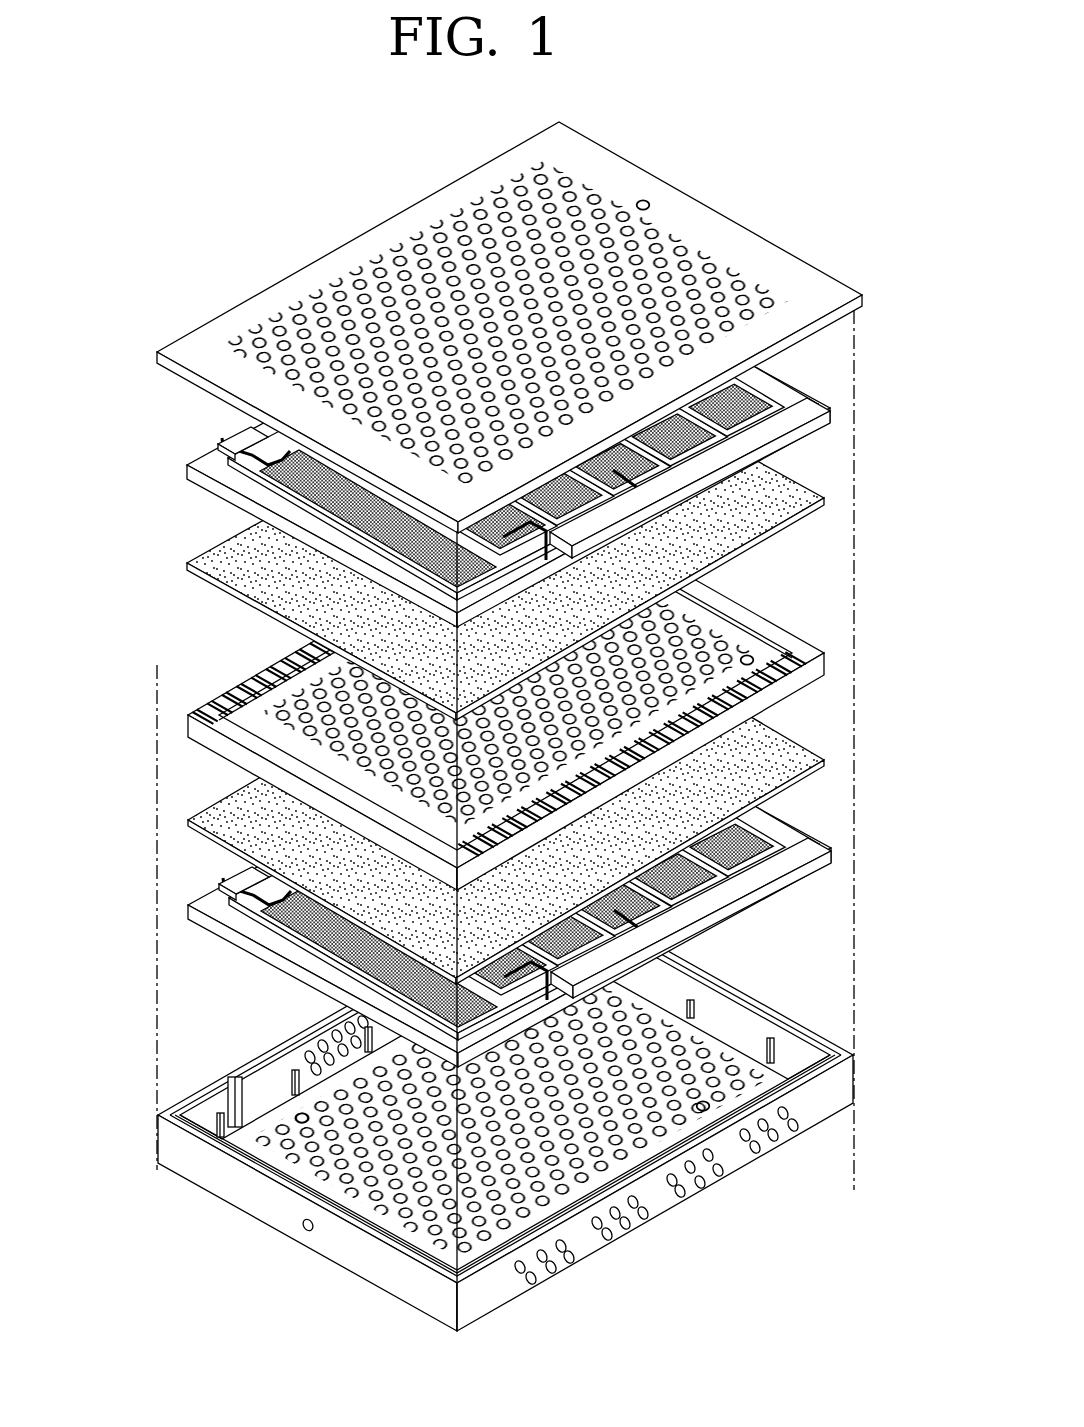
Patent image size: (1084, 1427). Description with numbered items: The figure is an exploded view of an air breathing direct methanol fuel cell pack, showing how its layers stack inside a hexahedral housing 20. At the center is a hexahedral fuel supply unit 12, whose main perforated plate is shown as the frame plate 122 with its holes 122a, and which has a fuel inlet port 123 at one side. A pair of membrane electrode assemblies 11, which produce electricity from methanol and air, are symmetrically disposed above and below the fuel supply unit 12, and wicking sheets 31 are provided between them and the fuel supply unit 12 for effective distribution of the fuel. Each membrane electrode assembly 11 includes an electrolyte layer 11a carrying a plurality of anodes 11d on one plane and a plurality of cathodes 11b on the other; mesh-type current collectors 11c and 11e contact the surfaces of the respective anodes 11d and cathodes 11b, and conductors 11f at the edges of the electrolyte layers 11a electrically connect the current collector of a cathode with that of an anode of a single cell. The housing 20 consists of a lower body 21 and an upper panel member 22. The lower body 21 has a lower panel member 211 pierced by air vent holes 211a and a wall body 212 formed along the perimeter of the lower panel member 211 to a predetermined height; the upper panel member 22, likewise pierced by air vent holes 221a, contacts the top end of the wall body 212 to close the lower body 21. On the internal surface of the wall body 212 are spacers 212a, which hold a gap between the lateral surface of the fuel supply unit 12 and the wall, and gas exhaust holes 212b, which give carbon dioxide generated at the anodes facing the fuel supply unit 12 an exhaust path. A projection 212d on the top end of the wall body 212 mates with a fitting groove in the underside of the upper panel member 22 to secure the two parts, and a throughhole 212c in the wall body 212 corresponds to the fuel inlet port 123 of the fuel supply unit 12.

The housing 20 is at (139, 228).
The upper panel member 22 is at (509, 326).
The air vent holes 221a is at (645, 200).
The membrane electrode assembly 11 is at (182, 913).
The electrolyte layer 11a is at (477, 434).
The cathodes 11b is at (233, 467).
The mesh-type current collector 11c is at (493, 443).
The anodes 11d is at (500, 883).
The mesh-type current collector 11e is at (333, 958).
The conductors 11f is at (240, 430).
The wicking sheets 31 is at (506, 668).
The fuel supply unit 12 is at (506, 695).
The perforated frame plate 122 is at (553, 695).
The holes of frame plate 122a is at (753, 655).
The fuel inlet port 123 is at (318, 804).
The lower body 21 is at (475, 1109).
The lower panel member 211 is at (530, 1109).
The air vent holes 211a is at (300, 1110).
The wall body 212 is at (475, 1109).
The spacers 212a is at (220, 1110).
The gas exhaust holes 212b is at (574, 1258).
The throughhole 212c is at (306, 1230).
The projection 212d is at (203, 1133).